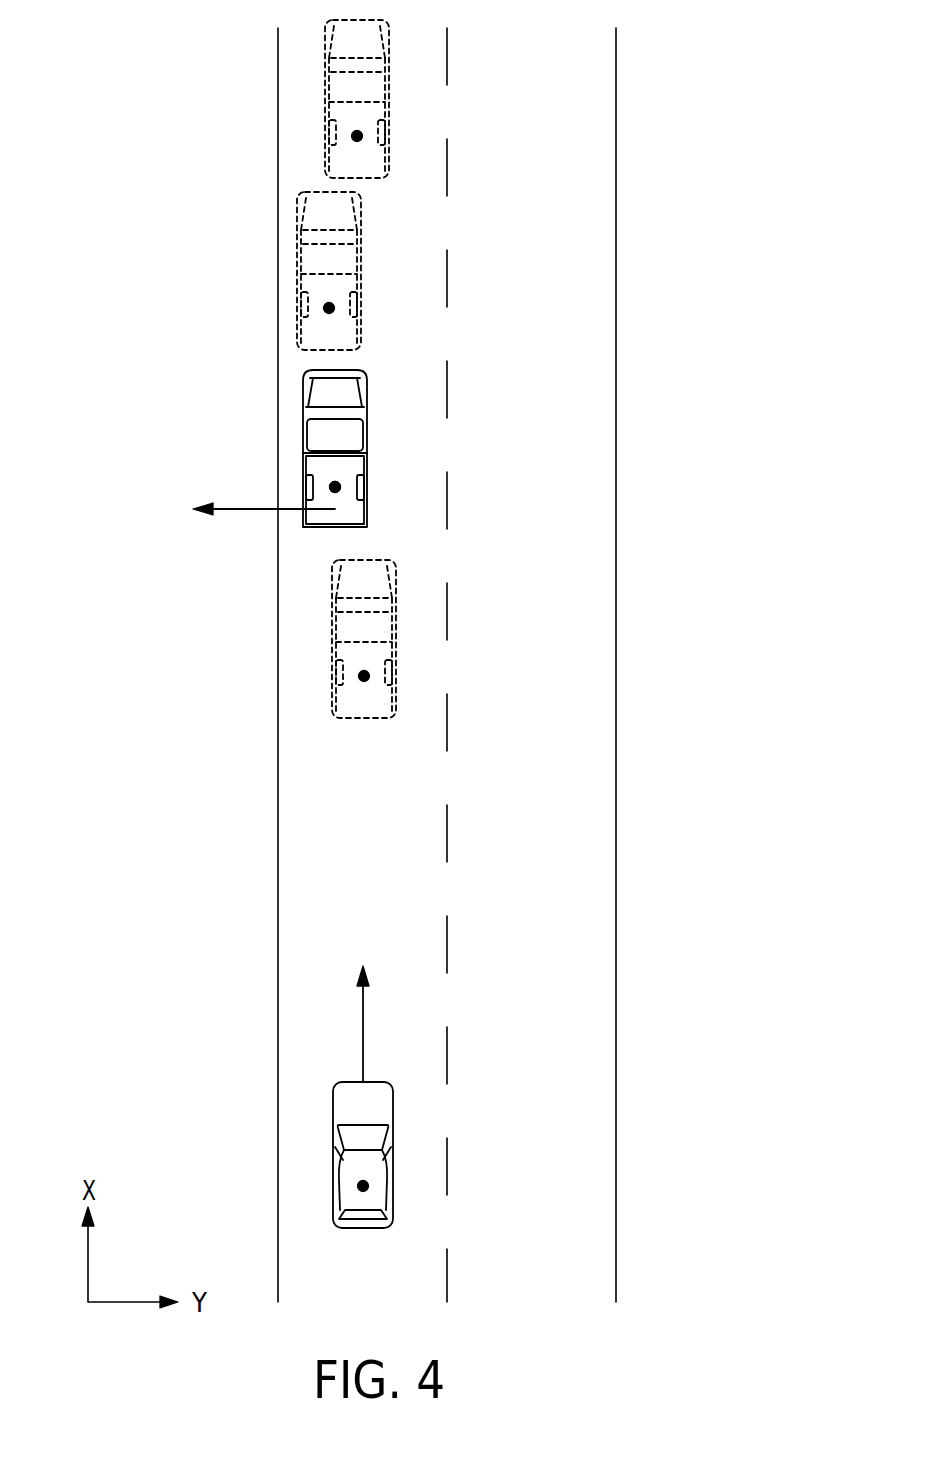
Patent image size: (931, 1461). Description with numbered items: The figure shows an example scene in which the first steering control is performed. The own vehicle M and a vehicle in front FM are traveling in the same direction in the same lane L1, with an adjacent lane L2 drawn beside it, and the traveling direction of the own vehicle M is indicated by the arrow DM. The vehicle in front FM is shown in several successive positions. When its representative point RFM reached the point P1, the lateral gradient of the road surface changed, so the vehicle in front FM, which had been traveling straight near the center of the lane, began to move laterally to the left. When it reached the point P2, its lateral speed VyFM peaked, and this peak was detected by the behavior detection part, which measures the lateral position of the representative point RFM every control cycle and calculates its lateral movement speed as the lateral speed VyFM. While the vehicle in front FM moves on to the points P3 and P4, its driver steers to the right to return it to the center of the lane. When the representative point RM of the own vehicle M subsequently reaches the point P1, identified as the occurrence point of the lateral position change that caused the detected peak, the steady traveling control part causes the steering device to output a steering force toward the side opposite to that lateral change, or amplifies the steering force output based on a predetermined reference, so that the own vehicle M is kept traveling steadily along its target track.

The point P1 is at (355, 676).
The point P2 is at (328, 487).
The point P3 is at (320, 308).
The point P4 is at (348, 136).
The vehicle in front FM is at (304, 396).
The own vehicle M is at (333, 1114).
The representative point of the vehicle in front RFM is at (340, 487).
The representative point of the own vehicle RM is at (358, 1185).
The traveling direction of the own vehicle DM is at (362, 1024).
The lateral speed of the vehicle in front VyFM is at (261, 530).
The lane L1 is at (378, 1296).
The second lane L2 is at (547, 1296).